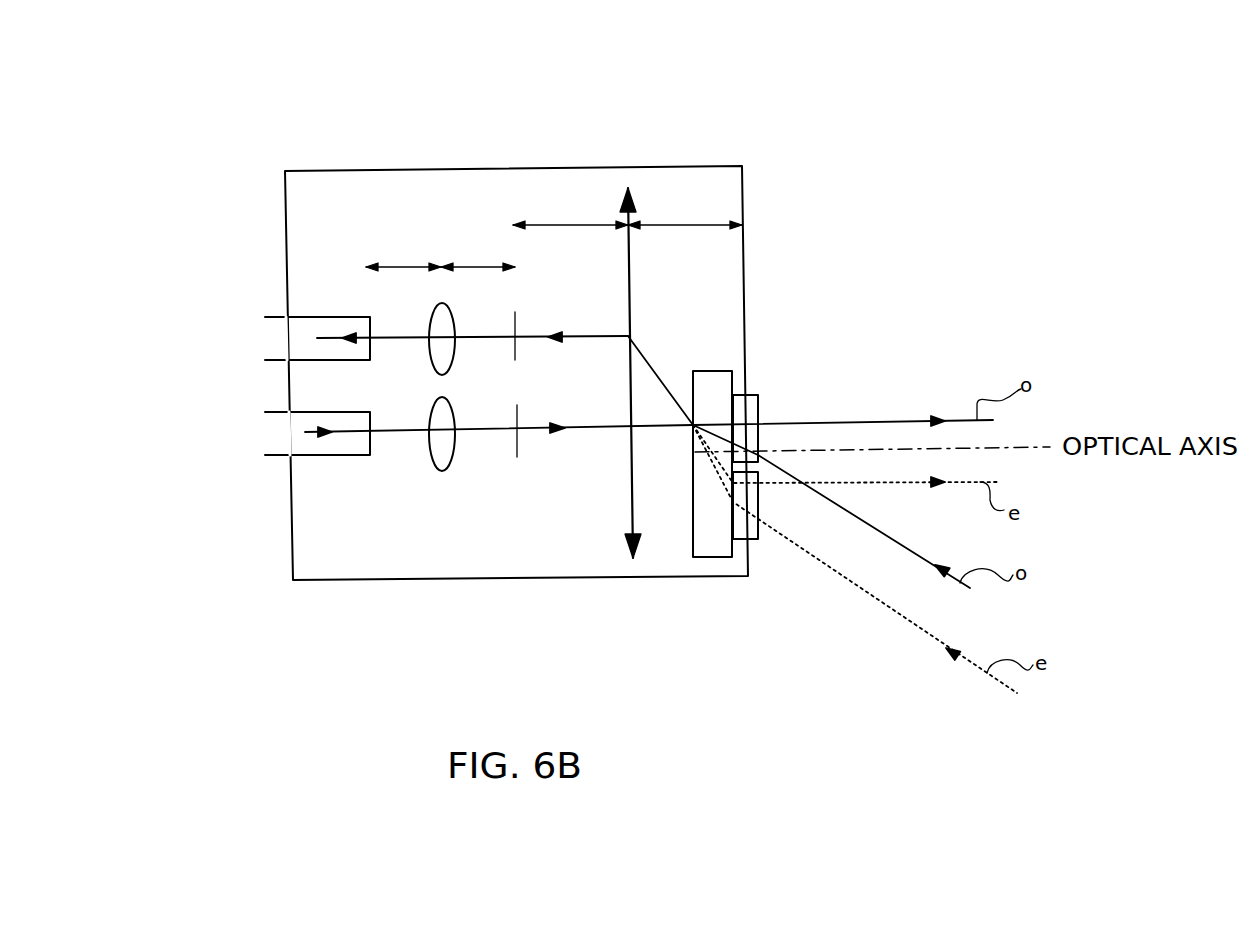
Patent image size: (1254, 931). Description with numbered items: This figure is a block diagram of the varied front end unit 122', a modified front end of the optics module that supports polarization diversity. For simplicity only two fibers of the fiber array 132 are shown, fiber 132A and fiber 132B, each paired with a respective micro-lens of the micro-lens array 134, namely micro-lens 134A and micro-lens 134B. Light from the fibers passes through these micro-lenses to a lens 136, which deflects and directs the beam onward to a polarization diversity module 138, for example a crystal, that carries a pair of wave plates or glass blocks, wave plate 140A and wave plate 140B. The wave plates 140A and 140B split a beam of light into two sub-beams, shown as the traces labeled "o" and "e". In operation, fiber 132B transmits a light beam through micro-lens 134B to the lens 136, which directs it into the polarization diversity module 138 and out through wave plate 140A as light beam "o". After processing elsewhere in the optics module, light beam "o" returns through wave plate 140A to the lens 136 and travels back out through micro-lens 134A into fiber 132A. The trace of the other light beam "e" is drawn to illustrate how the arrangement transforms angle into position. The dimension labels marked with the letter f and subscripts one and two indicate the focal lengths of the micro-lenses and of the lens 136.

The varied front end unit 122' is at (985, 112).
The fiber array 132 is at (262, 160).
The fiber 132A is at (275, 313).
The fiber 132B is at (275, 457).
The micro-lens array 134 is at (433, 140).
The micro-lens 134A is at (455, 310).
The micro-lens 134B is at (438, 467).
The lens 136 is at (630, 268).
The polarization diversity module 138 is at (710, 370).
The wave plate 140A is at (757, 398).
The wave plate 140B is at (758, 503).